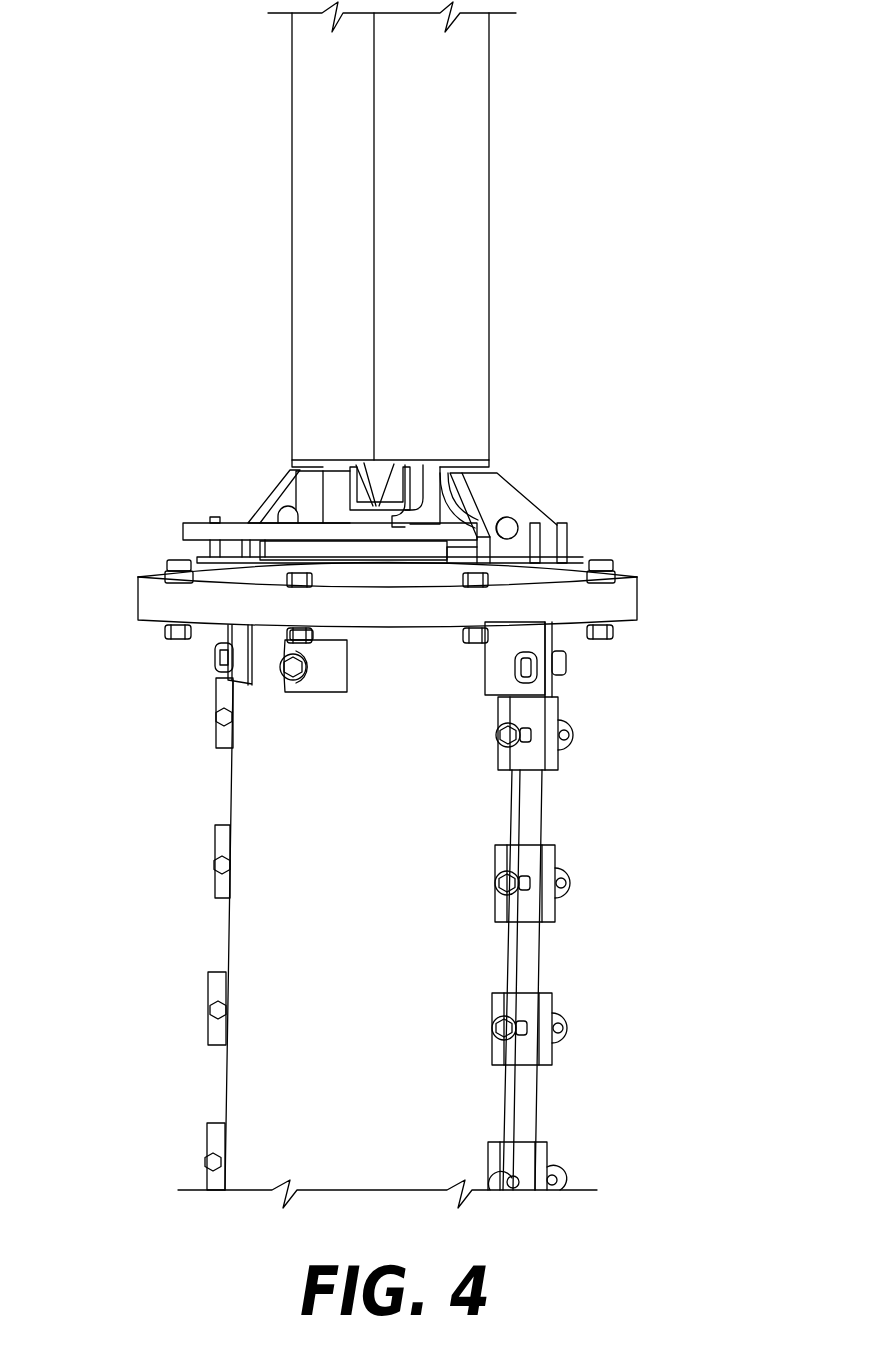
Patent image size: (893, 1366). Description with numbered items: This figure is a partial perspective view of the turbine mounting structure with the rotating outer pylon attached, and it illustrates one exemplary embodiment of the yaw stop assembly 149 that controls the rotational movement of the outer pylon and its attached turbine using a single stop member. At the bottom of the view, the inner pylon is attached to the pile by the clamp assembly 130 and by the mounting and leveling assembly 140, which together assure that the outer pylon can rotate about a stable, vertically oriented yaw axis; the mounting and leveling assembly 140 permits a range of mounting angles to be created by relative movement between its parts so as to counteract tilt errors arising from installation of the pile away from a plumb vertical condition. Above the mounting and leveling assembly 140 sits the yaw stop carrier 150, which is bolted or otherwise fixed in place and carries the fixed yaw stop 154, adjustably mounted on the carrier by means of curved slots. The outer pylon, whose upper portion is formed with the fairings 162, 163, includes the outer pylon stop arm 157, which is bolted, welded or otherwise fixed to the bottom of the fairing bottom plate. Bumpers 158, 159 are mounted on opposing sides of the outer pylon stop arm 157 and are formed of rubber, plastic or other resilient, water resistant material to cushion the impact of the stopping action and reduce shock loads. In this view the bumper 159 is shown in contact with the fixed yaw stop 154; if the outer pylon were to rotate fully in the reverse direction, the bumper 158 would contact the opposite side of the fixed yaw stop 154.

The clamp assembly 130 is at (248, 790).
The mounting and leveling assembly 140 is at (630, 595).
The stop assembly 149 is at (598, 508).
The yaw stop carrier 150 is at (183, 536).
The fixed yaw stop 154 is at (440, 489).
The outer pylon stop arm 157 is at (350, 503).
The bumper 158 is at (370, 496).
The bumper 159 is at (395, 488).
The fairing 162 is at (490, 250).
The fairing 163 is at (322, 280).